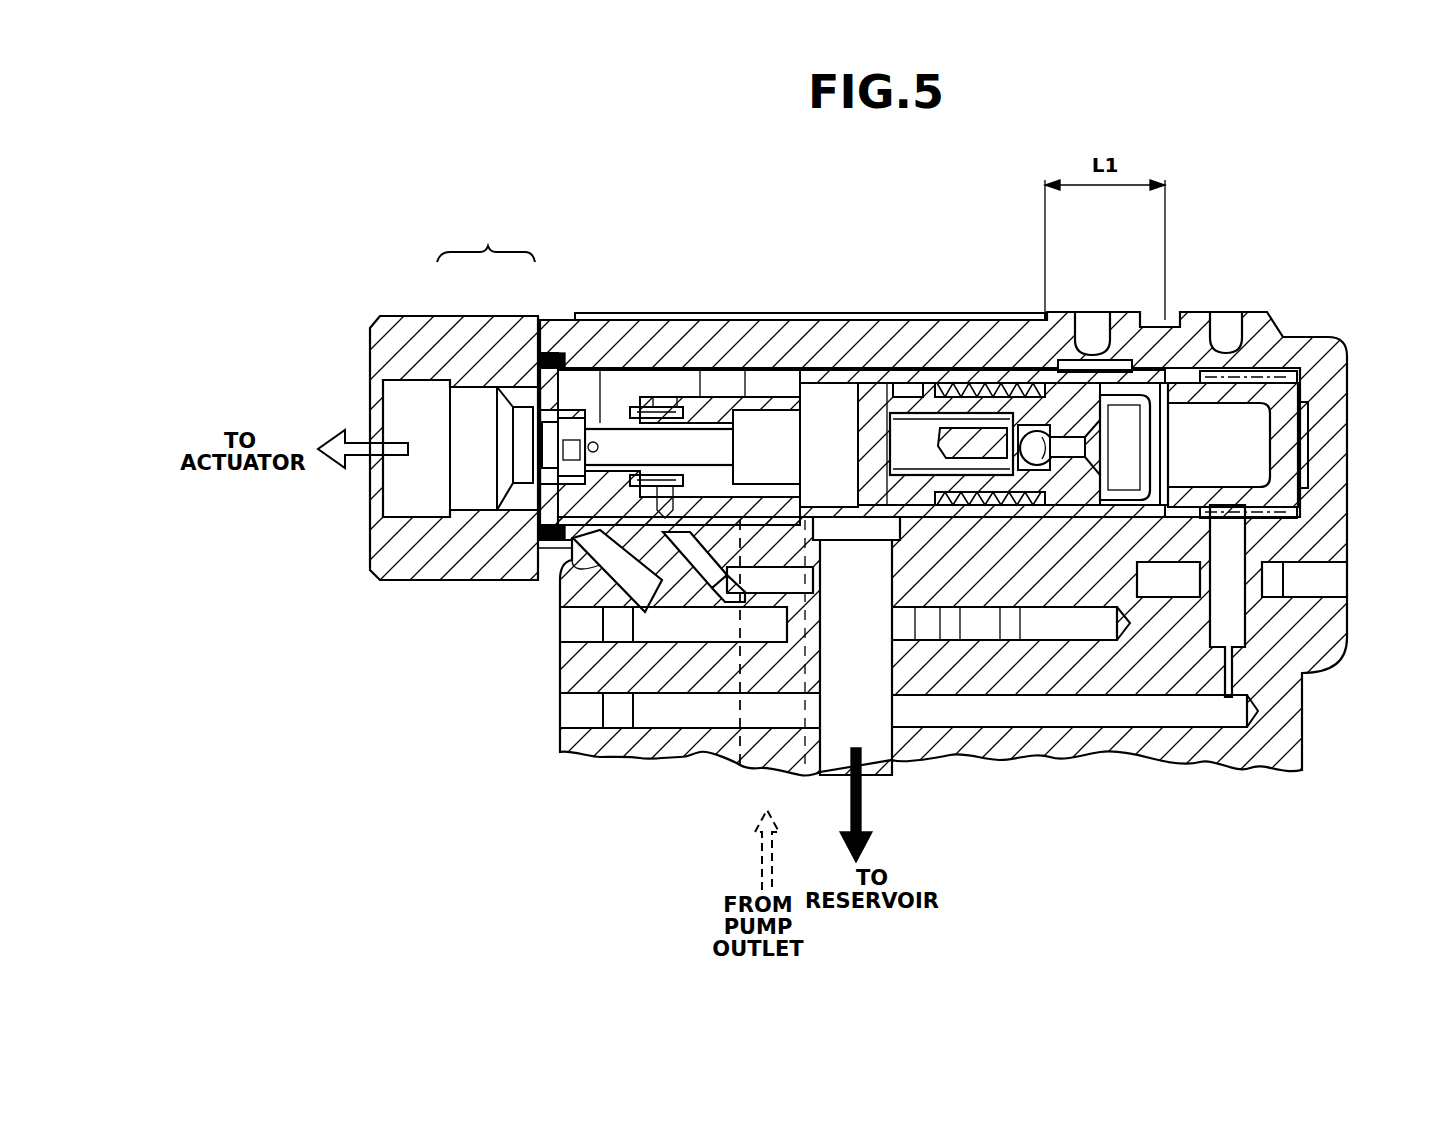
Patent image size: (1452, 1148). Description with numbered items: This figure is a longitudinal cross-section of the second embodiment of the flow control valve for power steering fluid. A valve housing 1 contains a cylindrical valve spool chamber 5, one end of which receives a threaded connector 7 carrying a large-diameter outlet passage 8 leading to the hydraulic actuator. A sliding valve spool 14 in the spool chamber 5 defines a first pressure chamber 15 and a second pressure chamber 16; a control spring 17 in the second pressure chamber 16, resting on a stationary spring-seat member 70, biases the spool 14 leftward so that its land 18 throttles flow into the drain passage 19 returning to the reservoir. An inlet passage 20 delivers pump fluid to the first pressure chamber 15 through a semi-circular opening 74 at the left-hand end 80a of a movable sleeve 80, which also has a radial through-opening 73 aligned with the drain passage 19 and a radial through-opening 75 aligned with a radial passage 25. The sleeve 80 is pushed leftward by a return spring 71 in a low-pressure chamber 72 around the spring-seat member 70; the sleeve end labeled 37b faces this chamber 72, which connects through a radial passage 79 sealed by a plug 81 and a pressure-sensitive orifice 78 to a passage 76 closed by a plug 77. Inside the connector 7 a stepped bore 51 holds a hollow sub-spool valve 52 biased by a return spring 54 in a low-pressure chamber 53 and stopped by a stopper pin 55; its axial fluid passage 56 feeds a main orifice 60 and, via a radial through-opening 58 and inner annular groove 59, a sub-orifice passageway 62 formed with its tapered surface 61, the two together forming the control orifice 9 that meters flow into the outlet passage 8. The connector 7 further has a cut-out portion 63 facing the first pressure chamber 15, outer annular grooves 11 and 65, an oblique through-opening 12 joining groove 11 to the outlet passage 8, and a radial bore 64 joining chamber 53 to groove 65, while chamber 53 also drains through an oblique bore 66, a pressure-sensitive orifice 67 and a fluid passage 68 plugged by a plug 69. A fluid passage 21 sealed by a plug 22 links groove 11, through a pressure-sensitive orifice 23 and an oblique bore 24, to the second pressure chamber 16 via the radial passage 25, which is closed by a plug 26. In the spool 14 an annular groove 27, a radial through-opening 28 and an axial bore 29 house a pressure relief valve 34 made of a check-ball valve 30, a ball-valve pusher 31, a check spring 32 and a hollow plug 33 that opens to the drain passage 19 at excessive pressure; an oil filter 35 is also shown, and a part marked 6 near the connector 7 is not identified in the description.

The control valve housing 1 is at (1315, 360).
The valve spool chamber 5 is at (962, 372).
The body end portion 6 is at (545, 560).
The connector 7 is at (385, 340).
The outlet passage 8 is at (420, 400).
The control orifice 9 is at (486, 243).
The annular groove 11 is at (588, 405).
The oblique through-opening 12 is at (545, 535).
The sliding valve spool 14 is at (938, 384).
The first pressure chamber 15 is at (808, 388).
The second pressure chamber 16 is at (1162, 430).
The control spring 17 is at (1130, 410).
The land 18 is at (886, 392).
The drain passage 19 is at (880, 740).
The inlet passage 20 is at (805, 760).
The fluid passage 21 is at (1070, 640).
The plug 22 is at (565, 620).
The pressure-sensitive orifice 23 is at (655, 575).
The oblique bore 24 is at (620, 585).
The radial passage 25 is at (1100, 598).
The plug 26 is at (1082, 440).
The annular groove 27 is at (905, 540).
The radial through-opening 28 is at (915, 562).
The axial bore 29 is at (918, 413).
The check-ball valve 30 is at (1030, 560).
The ball-valve pusher 31 is at (965, 562).
The check spring 32 is at (985, 430).
The plug 33 is at (1040, 432).
The pressure relief valve 34 is at (1005, 388).
The oil filter 35 is at (1220, 448).
The chamber 37b is at (1180, 525).
The stepped bore 51 is at (700, 395).
The sub-spool valve 52 is at (725, 565).
The low-pressure chamber 53 is at (680, 415).
The return spring 54 is at (640, 406).
The stopper pin 55 is at (828, 386).
The axial fluid passage 56 is at (770, 450).
The radial through-opening 58 is at (607, 400).
The annular groove 59 is at (565, 410).
The main orifice 60 is at (525, 400).
The tapered outer peripheral surface 61 is at (530, 465).
The sub-orifice passageway 62 is at (548, 420).
The cut-out portion 63 is at (795, 517).
The radial bore 64 is at (600, 566).
The annular groove 65 is at (725, 398).
The oblique bore 66 is at (690, 565).
The pressure-sensitive orifice 67 is at (710, 605).
The fluid passage 68 is at (1005, 592).
The plug 69 is at (1320, 582).
The stationary spring-seat member 70 is at (1285, 405).
The return spring 71 is at (1265, 370).
The low-pressure chamber 72 is at (1295, 513).
The radial through-opening 73 is at (862, 388).
The semi-circular opening 74 is at (778, 392).
The radial through-opening 75 is at (1095, 335).
The passage 76 is at (1190, 722).
The plug 77 is at (565, 710).
The pressure-sensitive orifice 78 is at (1240, 688).
The radial passage 79 is at (1240, 625).
The movable sleeve 80 is at (940, 562).
The left-hand end of movable sleeve 80a is at (750, 392).
The plug 81 is at (1227, 335).